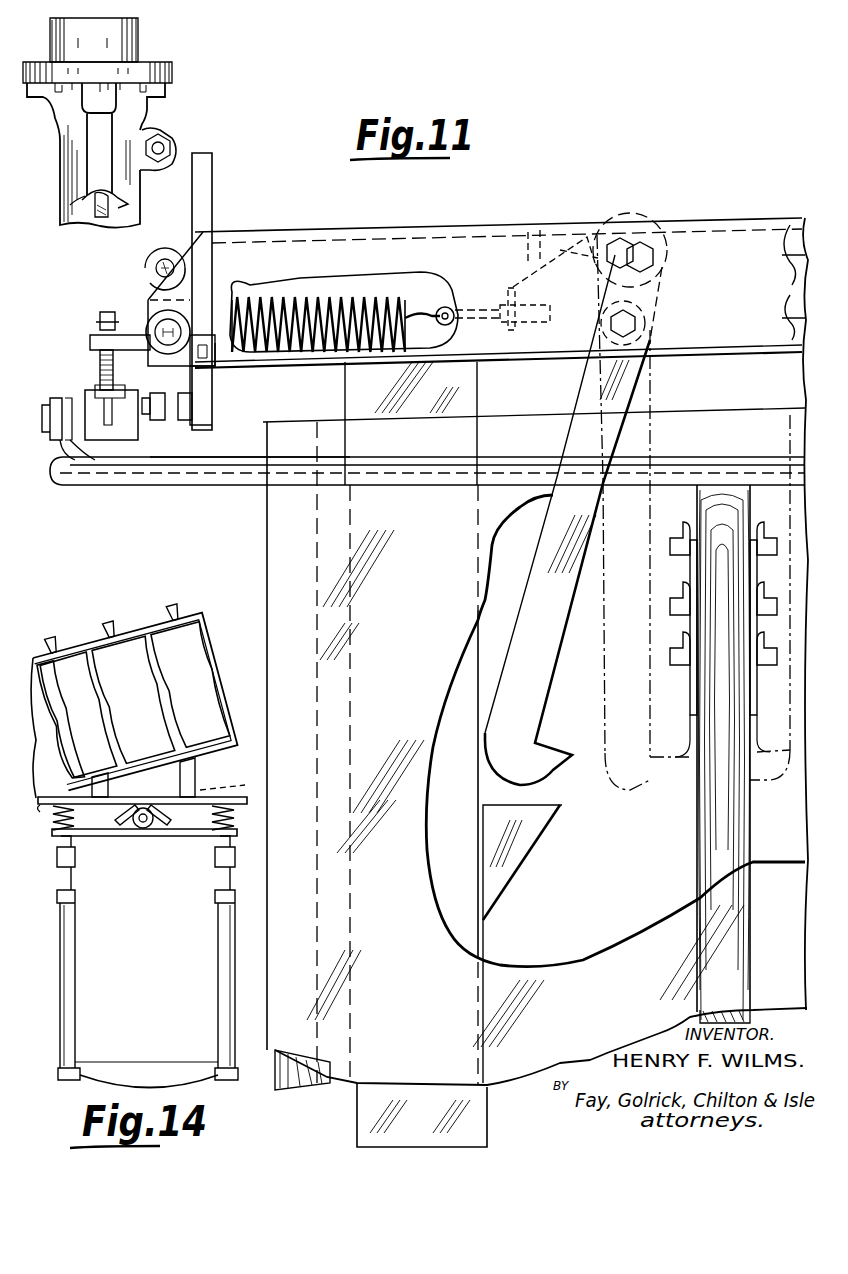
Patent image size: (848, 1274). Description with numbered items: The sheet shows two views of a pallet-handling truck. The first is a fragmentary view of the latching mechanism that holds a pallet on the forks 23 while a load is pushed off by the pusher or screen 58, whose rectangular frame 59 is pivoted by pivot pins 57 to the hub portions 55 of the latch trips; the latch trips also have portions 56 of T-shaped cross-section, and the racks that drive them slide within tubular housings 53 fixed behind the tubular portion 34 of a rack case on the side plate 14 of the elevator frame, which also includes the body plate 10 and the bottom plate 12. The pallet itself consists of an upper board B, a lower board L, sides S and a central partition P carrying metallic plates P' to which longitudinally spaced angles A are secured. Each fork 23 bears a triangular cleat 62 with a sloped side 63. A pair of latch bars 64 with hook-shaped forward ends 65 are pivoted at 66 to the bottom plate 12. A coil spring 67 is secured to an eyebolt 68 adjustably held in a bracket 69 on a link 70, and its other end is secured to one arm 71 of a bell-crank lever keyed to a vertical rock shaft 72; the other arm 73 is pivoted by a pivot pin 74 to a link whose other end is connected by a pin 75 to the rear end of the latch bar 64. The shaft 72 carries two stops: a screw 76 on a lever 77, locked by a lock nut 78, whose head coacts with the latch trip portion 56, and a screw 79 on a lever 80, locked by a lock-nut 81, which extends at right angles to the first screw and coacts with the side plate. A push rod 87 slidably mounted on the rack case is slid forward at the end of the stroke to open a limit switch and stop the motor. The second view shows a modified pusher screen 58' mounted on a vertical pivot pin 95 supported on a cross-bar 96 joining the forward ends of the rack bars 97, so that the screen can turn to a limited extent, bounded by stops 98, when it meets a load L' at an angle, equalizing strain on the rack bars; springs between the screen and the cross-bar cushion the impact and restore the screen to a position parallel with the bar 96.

In FIG. 11, the body plate 10 is at (750, 348).
In FIG. 11, the bottom plate 12 is at (706, 234).
In FIG. 11, the side plate 14 is at (213, 197).
In FIG. 11, the forks 23 is at (488, 1130).
In FIG. 14, the forks 23 is at (105, 790).
In FIG. 11, the tubular portion 34 is at (152, 130).
In FIG. 11, the tubular housings 53 is at (141, 32).
In FIG. 11, the hub portions 55 is at (88, 395).
In FIG. 11, the portions of T-shaped cross-section 56 is at (80, 478).
In FIG. 11, the pivot pins 57 is at (100, 480).
In FIG. 11, the pusher or screen 58 is at (427, 487).
In FIG. 11, the rectangular frame 59 is at (236, 478).
In FIG. 11, the triangular shaped cleat 62 is at (540, 830).
In FIG. 11, the sloped side 63 is at (512, 870).
In FIG. 11, the latch bars 64 is at (548, 688).
In FIG. 11, the hook-shaped forward ends 65 is at (575, 795).
In FIG. 11, the pivotal connection 66 is at (795, 315).
In FIG. 11, the coil spring 67 is at (283, 355).
In FIG. 11, the eyebolt 68 is at (447, 305).
In FIG. 11, the bracket 69 is at (545, 250).
In FIG. 11, the link 70 is at (378, 248).
In FIG. 11, the arm of bell-crank lever 71 is at (216, 356).
In FIG. 11, the rock shaft 72 is at (150, 322).
In FIG. 11, the other arm of bell-crank lever 73 is at (148, 300).
In FIG. 11, the pivot pin 74 is at (153, 262).
In FIG. 11, the pin 75 is at (625, 240).
In FIG. 11, the screw 76 is at (92, 350).
In FIG. 11, the lever 77 is at (114, 355).
In FIG. 11, the lock nut 78 is at (96, 327).
In FIG. 11, the screw 79 is at (186, 420).
In FIG. 11, the lever 80 is at (205, 385).
In FIG. 11, the lock-nut 81 is at (158, 420).
In FIG. 11, the push rod 87 is at (93, 205).
In FIG. 14, the pivot shaft or pin 95 is at (143, 830).
In FIG. 14, the cross-bar 96 is at (186, 838).
In FIG. 14, the rack bars 97 is at (60, 850).
In FIG. 14, the stops 98 is at (122, 833).
In FIG. 11, the angles A is at (762, 664).
In FIG. 11, the upper board B is at (632, 1062).
In FIG. 11, the lower board L is at (615, 798).
In FIG. 14, the load L' is at (140, 698).
In FIG. 11, the central partition P is at (709, 754).
In FIG. 11, the metallic plates P' is at (725, 639).
In FIG. 11, the sides S is at (270, 1082).
In FIG. 14, the pusher screen 58' is at (148, 778).